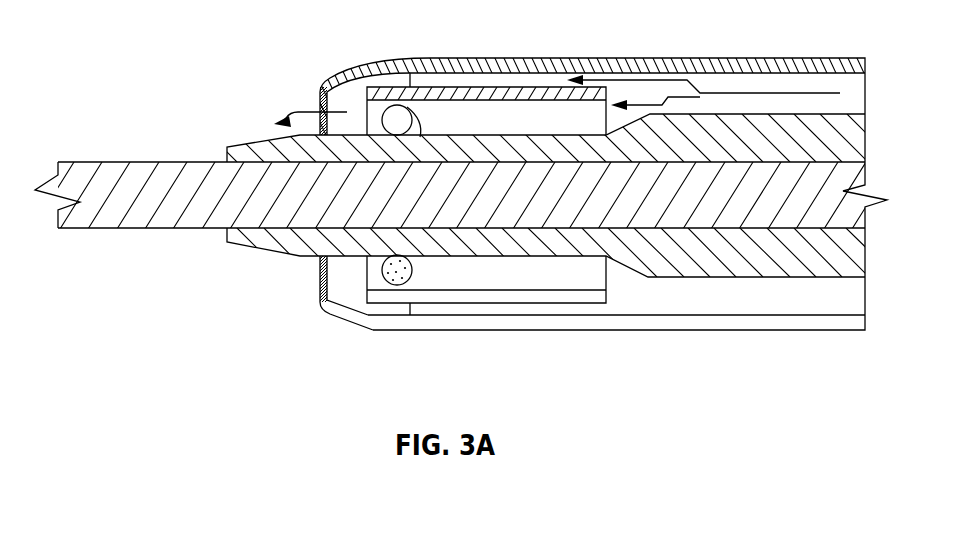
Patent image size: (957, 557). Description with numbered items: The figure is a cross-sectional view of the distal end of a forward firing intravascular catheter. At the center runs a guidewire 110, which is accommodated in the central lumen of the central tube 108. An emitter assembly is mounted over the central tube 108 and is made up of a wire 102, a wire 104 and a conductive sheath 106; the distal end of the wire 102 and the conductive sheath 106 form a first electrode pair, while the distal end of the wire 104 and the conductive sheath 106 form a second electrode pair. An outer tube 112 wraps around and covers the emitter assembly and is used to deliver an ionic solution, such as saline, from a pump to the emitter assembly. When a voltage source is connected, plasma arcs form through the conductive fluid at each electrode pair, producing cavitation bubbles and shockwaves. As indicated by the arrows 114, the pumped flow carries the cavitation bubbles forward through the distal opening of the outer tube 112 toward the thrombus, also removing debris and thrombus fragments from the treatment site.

The wire 102 is at (398, 107).
The wire 104 is at (388, 300).
The conductive sheath 106 is at (585, 305).
The central tube 108 is at (280, 240).
The guidewire 110 is at (170, 213).
The outer tube 112 is at (793, 332).
The arrows 114 is at (302, 120).